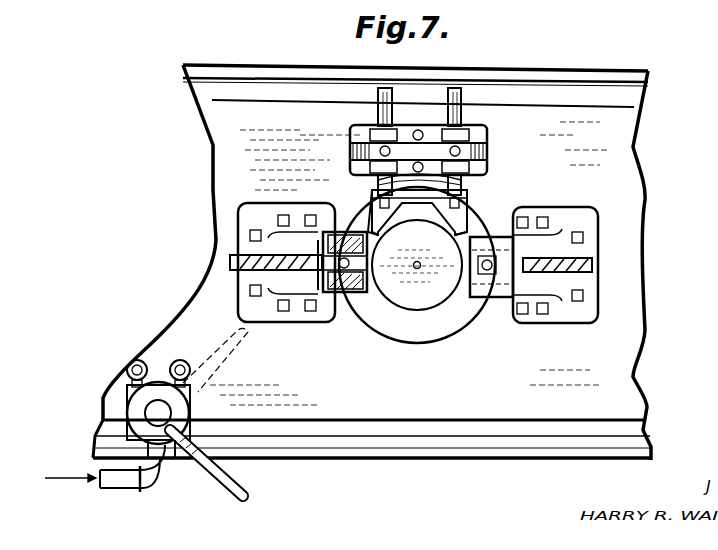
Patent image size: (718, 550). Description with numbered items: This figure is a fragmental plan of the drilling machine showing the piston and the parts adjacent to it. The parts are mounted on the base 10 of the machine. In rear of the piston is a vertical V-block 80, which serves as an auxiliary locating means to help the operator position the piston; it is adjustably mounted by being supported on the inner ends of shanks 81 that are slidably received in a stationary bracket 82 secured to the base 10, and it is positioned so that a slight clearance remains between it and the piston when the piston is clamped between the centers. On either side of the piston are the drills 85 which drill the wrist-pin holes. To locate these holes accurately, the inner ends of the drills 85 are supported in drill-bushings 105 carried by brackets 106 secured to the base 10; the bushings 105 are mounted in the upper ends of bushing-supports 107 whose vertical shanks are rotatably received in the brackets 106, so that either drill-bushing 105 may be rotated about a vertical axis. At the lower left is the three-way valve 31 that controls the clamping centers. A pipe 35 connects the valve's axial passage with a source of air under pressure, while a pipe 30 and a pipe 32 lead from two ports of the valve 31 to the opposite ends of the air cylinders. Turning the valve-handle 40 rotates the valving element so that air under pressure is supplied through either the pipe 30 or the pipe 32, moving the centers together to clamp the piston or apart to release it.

The base 10 is at (606, 73).
The shanks 81 is at (383, 88).
The stationary bracket 82 is at (412, 127).
The vertical V-block 80 is at (465, 215).
The drill-bushings 105 is at (348, 292).
The bushing-supports 107 is at (343, 230).
The brackets 106 is at (325, 322).
The drills 85 is at (232, 262).
The three-way valve 31 is at (190, 408).
The pipe 30 is at (137, 362).
The pipe 32 is at (183, 360).
The valve-handle 40 is at (227, 498).
The pipe 35 is at (123, 488).